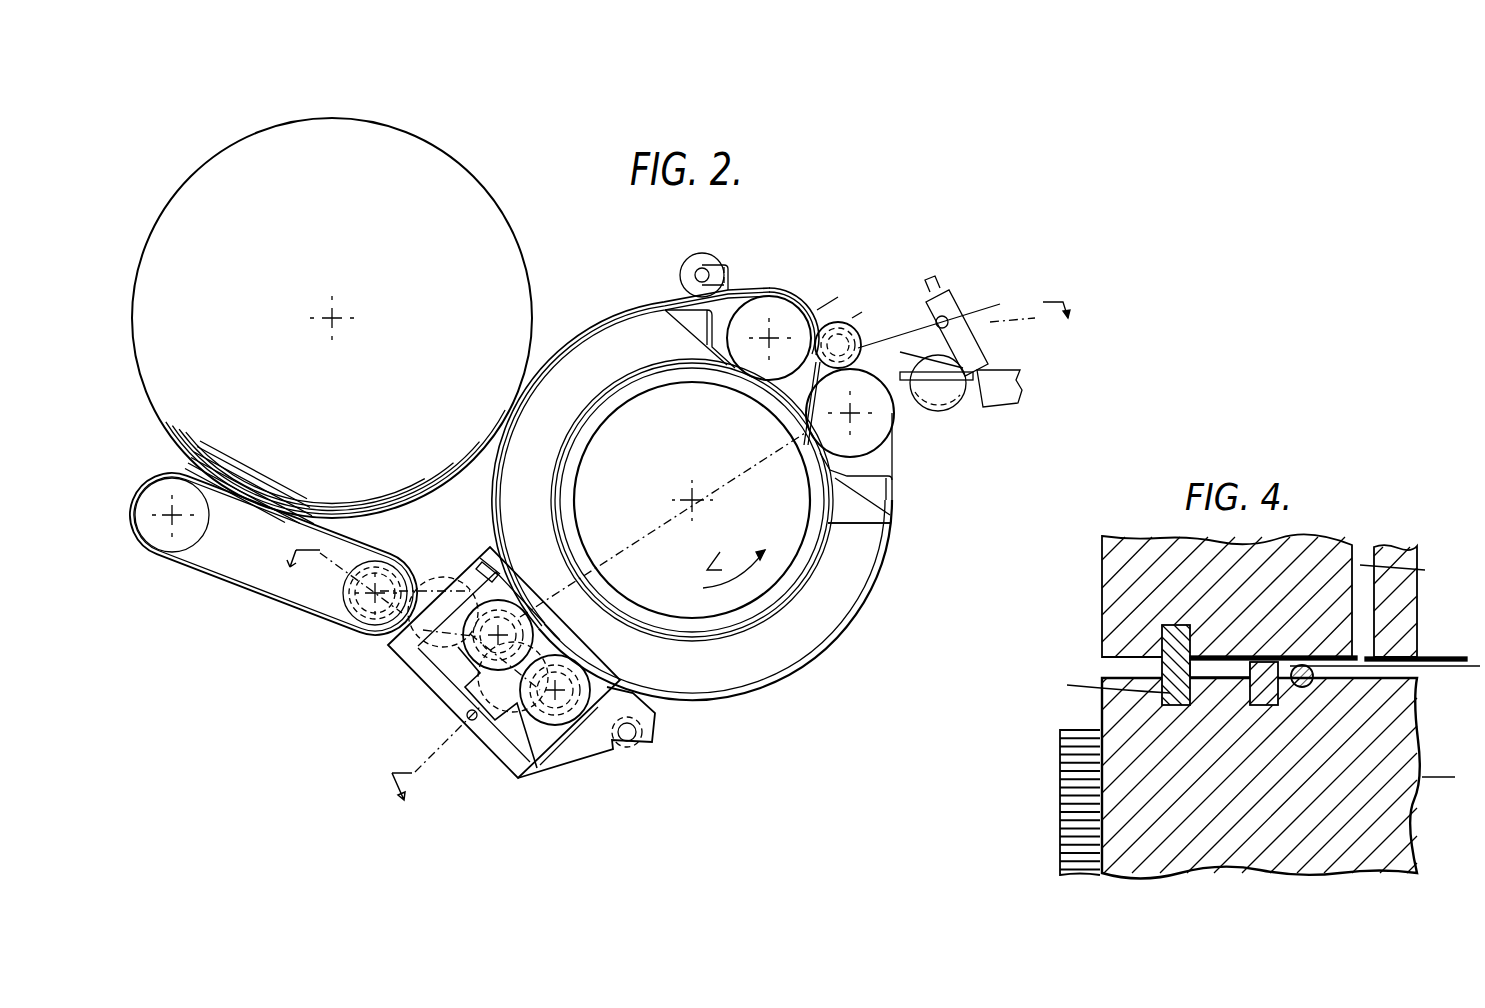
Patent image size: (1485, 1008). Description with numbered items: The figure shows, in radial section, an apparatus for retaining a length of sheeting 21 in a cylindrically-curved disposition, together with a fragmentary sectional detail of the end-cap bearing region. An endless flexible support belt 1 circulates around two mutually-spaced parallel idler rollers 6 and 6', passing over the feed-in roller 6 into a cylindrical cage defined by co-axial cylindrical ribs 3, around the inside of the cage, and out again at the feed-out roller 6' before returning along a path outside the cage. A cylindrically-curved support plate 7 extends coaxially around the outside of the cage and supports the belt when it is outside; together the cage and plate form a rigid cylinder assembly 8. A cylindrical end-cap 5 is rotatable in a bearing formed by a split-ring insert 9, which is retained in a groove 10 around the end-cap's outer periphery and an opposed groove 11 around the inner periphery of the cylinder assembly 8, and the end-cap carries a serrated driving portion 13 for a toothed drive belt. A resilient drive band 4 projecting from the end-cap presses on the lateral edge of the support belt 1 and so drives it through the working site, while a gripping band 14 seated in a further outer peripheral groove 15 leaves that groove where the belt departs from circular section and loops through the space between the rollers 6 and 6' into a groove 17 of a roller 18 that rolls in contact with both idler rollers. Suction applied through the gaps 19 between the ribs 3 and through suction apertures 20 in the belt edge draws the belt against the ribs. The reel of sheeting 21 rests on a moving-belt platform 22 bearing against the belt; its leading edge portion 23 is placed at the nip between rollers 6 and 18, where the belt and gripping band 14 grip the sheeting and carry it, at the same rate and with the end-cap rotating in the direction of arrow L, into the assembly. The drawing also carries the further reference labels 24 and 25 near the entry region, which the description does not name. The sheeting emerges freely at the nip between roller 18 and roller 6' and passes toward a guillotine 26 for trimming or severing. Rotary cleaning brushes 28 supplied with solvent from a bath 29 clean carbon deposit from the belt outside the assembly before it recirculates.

In FIG. 2, the endless flexible support belt 1 is at (878, 590).
In FIG. 4, the endless flexible support belt 1 is at (1452, 657).
In FIG. 4, the cylindrical rib 3 is at (1382, 593).
In FIG. 4, the drive band 4 is at (1447, 776).
In FIG. 2, the end-cap 5 is at (773, 598).
In FIG. 4, the end-cap 5 is at (1358, 788).
In FIG. 2, the idler roller 6 is at (745, 309).
In FIG. 2, the idler roller 6' is at (858, 362).
In FIG. 2, the cylindrically-curved support plate 7 is at (882, 552).
In FIG. 2, the cylinder assembly 8 is at (827, 598).
In FIG. 4, the cylinder assembly 8 is at (1123, 597).
In FIG. 4, the split-ring insert 9 is at (1177, 663).
In FIG. 4, the groove 10 is at (1146, 680).
In FIG. 4, the groove 11 is at (1173, 635).
In FIG. 4, the serrated driving portion 13 is at (1070, 777).
In FIG. 2, the gripping band 14 is at (890, 523).
In FIG. 4, the gripping band 14 is at (1308, 690).
In FIG. 4, the outer peripheral groove 15 is at (1275, 702).
In FIG. 2, the groove 17 is at (838, 345).
In FIG. 2, the roller 18 is at (873, 314).
In FIG. 4, the gap 19 is at (1410, 574).
In FIG. 4, the suction aperture 20 is at (1362, 652).
In FIG. 2, the sheeting 21 is at (487, 285).
In FIG. 4, the sheeting 21 is at (1442, 668).
In FIG. 2, the moving-belt platform 22 is at (292, 568).
In FIG. 2, the leading edge portion 23 is at (793, 292).
In FIG. 2, the nip 24 is at (844, 294).
In FIG. 2, the nozzle device 25 is at (982, 308).
In FIG. 2, the guillotine 26 is at (972, 385).
In FIG. 2, the rotary cleaning brush 28 is at (545, 685).
In FIG. 2, the bath 29 is at (528, 738).